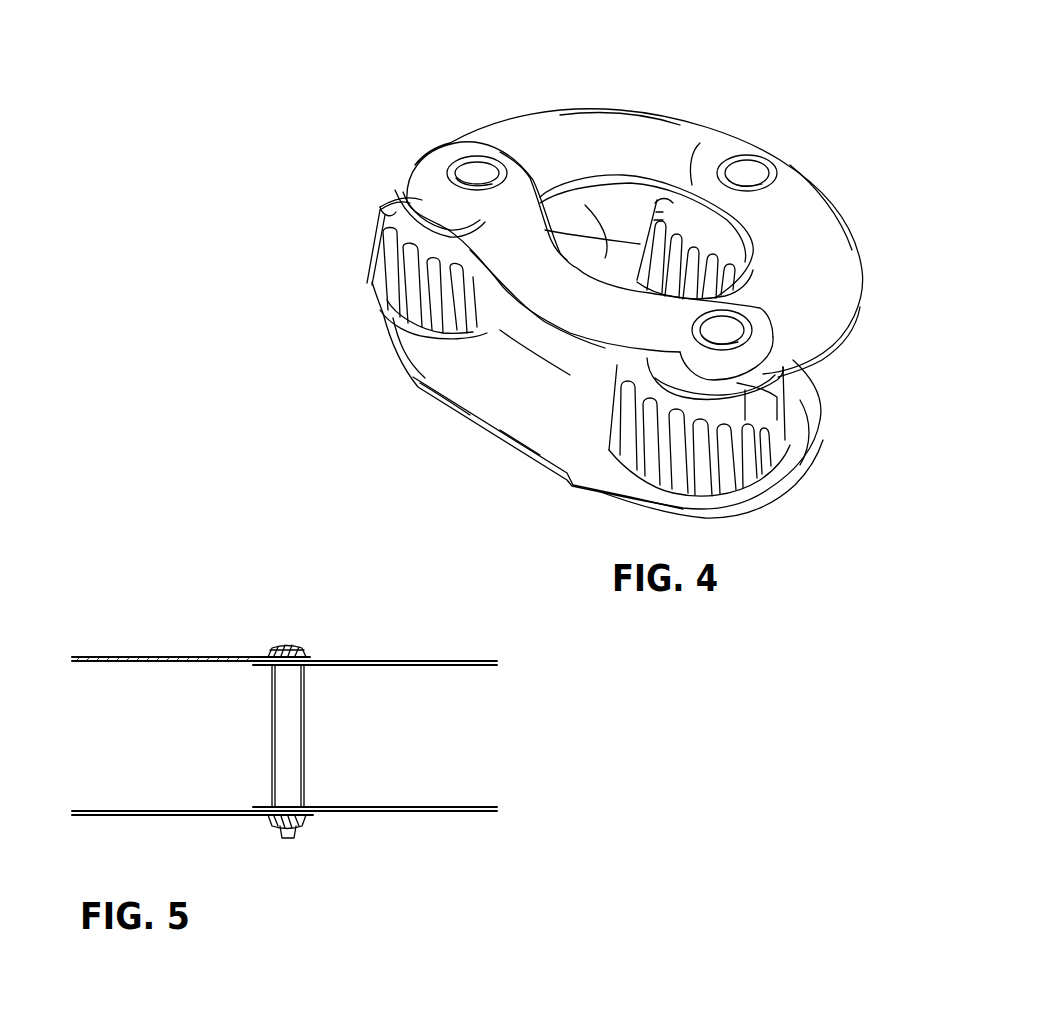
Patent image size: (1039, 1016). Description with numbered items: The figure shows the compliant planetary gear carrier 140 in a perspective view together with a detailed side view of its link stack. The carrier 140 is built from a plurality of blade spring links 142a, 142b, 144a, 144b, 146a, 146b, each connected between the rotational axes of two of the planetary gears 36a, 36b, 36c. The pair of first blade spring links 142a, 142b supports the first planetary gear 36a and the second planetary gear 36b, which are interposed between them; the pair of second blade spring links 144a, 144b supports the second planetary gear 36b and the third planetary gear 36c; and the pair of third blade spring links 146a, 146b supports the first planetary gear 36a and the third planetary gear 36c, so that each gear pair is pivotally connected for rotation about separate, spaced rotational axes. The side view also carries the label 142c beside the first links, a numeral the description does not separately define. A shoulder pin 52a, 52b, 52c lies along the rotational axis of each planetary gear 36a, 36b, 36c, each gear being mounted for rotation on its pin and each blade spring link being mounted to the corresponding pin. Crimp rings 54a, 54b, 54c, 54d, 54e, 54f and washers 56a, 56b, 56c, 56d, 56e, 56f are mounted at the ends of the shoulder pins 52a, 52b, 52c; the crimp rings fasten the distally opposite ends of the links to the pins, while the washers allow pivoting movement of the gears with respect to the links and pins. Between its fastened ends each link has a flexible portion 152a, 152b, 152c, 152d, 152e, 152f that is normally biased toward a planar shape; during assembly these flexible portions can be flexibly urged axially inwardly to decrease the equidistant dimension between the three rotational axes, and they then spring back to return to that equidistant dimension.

In FIG. 4, the compliant planetary gear carrier 140 is at (605, 281).
In FIG. 4, the first blade spring link 142a is at (817, 287).
In FIG. 5, the first blade spring link 142a is at (174, 617).
In FIG. 4, the first blade spring link 142b is at (820, 413).
In FIG. 5, the first blade spring link 142b is at (283, 771).
In FIG. 5, the third plate 142c is at (283, 771).
In FIG. 4, the second blade spring link 144a is at (413, 207).
In FIG. 5, the second blade spring link 144a is at (174, 617).
In FIG. 4, the second blade spring link 144b is at (453, 372).
In FIG. 5, the second blade spring link 144b is at (283, 771).
In FIG. 4, the third blade spring link 146a is at (513, 112).
In FIG. 5, the third blade spring link 146a is at (118, 657).
In FIG. 4, the third blade spring link 146b is at (530, 160).
In FIG. 5, the third blade spring link 146b is at (425, 668).
In FIG. 4, the flexible portion 152a is at (800, 210).
In FIG. 4, the flexible portion 152b is at (543, 298).
In FIG. 4, the flexible portion 152c is at (622, 140).
In FIG. 4, the flexible portion 152d is at (790, 440).
In FIG. 4, the flexible portion 152e is at (520, 413).
In FIG. 4, the flexible portion 152f is at (597, 253).
In FIG. 4, the first planetary gear 36a is at (677, 215).
In FIG. 4, the second planetary gear 36b is at (730, 463).
In FIG. 4, the third planetary gear 36c is at (375, 280).
In FIG. 4, the crimp ring 54a is at (742, 178).
In FIG. 5, the crimp ring 54a is at (302, 599).
In FIG. 4, the crimp ring 54b is at (780, 357).
In FIG. 5, the crimp ring 54b is at (302, 599).
In FIG. 4, the crimp ring 54c is at (456, 145).
In FIG. 5, the crimp ring 54c is at (285, 648).
In FIG. 5, the crimp ring 54d is at (201, 846).
In FIG. 5, the crimp ring 54e is at (201, 846).
In FIG. 5, the crimp ring 54f is at (280, 818).
In FIG. 5, the washer 56a is at (392, 627).
In FIG. 5, the washer 56b is at (392, 627).
In FIG. 5, the washer 56c is at (305, 655).
In FIG. 5, the washer 56d is at (354, 879).
In FIG. 5, the washer 56e is at (354, 879).
In FIG. 5, the washer 56f is at (286, 840).
In FIG. 5, the shoulder pin 52a is at (383, 736).
In FIG. 5, the shoulder pin 52b is at (383, 736).
In FIG. 5, the shoulder pin 52c is at (287, 770).